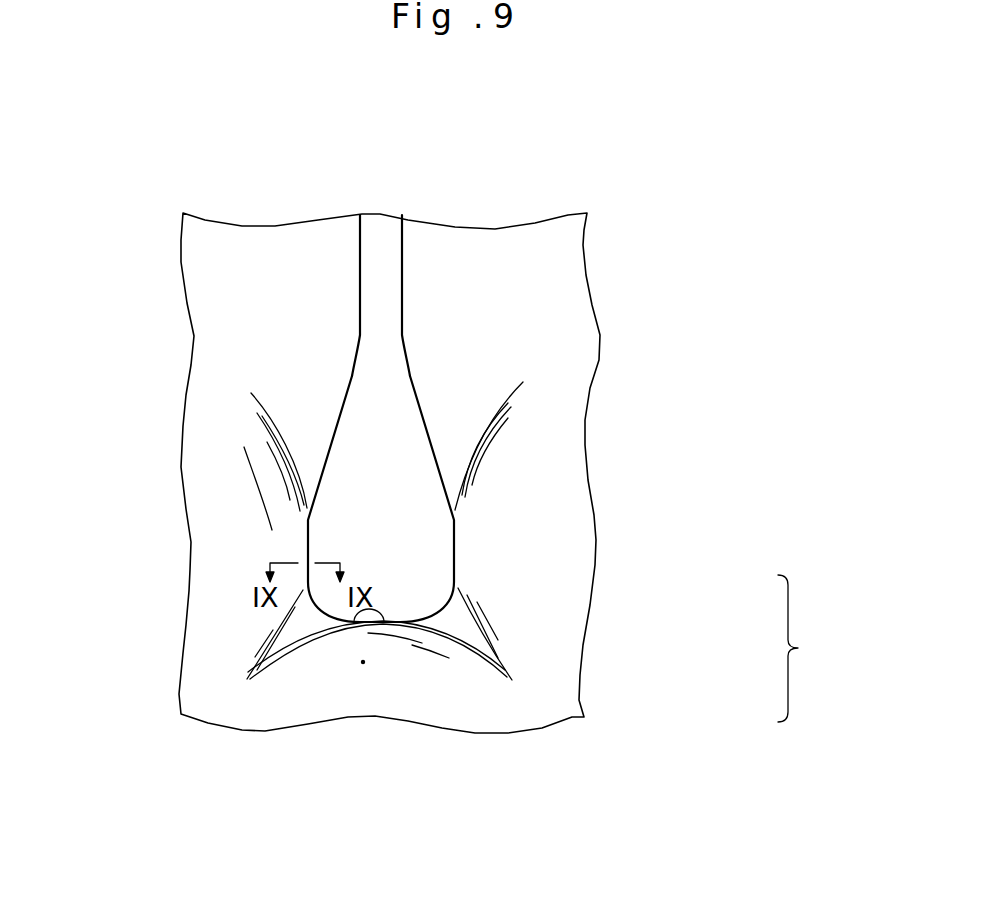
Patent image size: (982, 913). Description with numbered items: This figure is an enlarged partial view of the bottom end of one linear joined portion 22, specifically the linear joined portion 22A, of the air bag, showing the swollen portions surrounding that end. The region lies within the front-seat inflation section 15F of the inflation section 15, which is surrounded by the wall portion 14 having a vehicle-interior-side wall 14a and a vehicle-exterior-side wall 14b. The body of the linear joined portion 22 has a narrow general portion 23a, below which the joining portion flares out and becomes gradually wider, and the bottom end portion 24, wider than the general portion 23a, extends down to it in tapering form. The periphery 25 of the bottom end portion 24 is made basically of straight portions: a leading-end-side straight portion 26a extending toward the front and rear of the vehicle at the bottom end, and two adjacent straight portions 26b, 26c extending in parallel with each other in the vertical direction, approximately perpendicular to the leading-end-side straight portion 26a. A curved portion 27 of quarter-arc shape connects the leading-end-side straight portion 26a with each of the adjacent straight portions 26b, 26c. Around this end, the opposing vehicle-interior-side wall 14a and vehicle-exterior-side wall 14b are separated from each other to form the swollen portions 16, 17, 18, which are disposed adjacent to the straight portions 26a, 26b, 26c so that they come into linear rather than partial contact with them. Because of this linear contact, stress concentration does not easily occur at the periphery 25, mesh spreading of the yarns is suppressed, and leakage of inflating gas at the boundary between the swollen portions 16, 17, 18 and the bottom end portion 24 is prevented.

The wall portion 14 is at (509, 473).
The vehicle-interior-side wall 14a is at (572, 608).
The vehicle-exterior-side wall 14b is at (567, 648).
The inflation section 15 is at (138, 721).
The front-seat inflation section 15F is at (188, 650).
The swollen portion 16 is at (363, 662).
The swollen portion 17 is at (268, 546).
The swollen portion 18 is at (477, 546).
The linear joined portion 22 is at (468, 359).
The linear joined portion 22A is at (423, 265).
The general portion 23a is at (377, 278).
The bottom end portion 24 is at (403, 640).
The periphery 25 is at (455, 573).
The leading-end-side straight portion 26a is at (343, 623).
The adjacent straight portion 26b is at (308, 548).
The adjacent straight portion 26c is at (455, 553).
The curved portion 27 is at (318, 607).